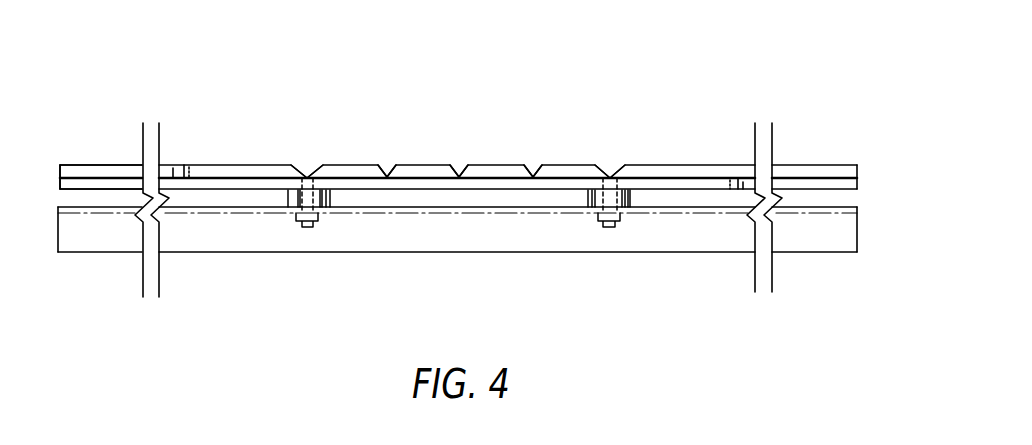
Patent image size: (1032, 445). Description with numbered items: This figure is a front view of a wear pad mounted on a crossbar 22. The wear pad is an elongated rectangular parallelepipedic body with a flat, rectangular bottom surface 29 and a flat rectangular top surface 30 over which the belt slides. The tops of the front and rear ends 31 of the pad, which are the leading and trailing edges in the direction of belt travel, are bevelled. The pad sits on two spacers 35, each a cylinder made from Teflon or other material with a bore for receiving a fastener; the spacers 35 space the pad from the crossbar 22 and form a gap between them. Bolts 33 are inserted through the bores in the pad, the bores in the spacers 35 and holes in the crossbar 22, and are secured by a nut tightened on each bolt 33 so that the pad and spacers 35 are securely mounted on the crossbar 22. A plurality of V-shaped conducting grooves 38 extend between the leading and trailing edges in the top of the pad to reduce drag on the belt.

The crossbar 22 is at (510, 243).
The bottom surface 29 is at (826, 191).
The top surface 30 is at (725, 164).
The front and rear ends 31 is at (98, 172).
The bolt 33 is at (298, 160).
The spacer 35 is at (285, 195).
The V-shaped conducting grooves 38 is at (533, 165).